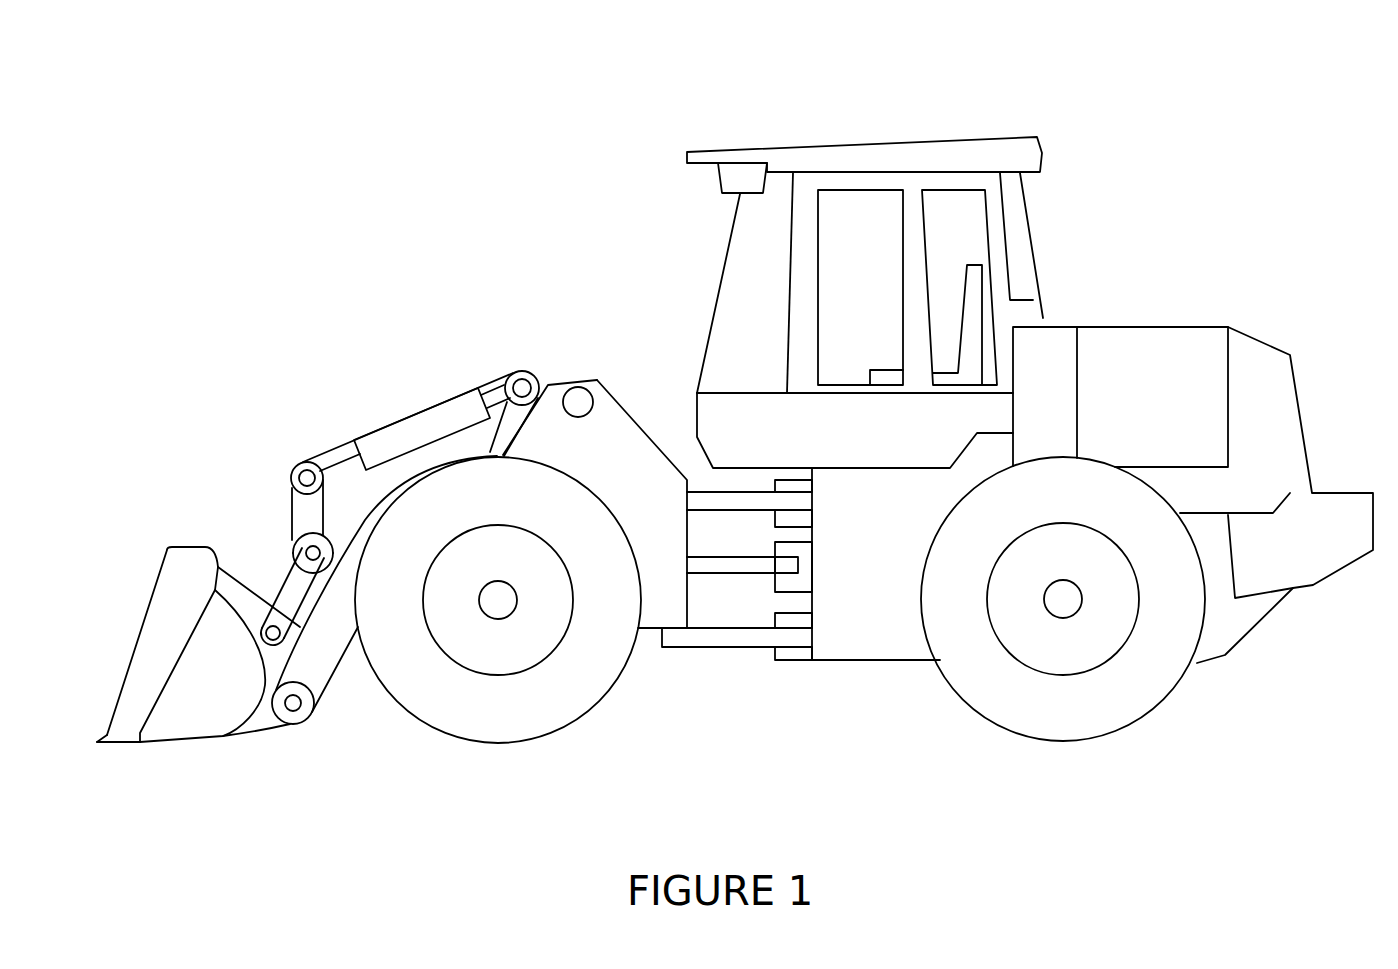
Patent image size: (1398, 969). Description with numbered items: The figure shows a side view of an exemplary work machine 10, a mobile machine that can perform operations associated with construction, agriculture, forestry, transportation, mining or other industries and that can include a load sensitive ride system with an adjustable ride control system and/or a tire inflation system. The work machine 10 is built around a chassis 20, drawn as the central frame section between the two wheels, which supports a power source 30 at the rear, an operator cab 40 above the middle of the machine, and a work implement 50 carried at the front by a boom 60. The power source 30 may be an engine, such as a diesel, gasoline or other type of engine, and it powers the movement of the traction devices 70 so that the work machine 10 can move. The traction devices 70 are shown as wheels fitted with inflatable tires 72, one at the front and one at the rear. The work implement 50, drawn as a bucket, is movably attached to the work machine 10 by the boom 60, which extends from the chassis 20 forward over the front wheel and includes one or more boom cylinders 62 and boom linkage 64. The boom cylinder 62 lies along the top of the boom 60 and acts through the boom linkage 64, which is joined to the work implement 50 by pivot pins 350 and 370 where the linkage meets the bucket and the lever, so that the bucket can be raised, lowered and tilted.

The work machine 10 is at (430, 172).
The chassis 20 is at (702, 682).
The power source 30 is at (1171, 417).
The operator cab 40 is at (1037, 137).
The work implement 50 is at (153, 598).
The boom 60 is at (337, 370).
The boom cylinder 62 is at (443, 417).
The boom linkage 64 is at (302, 518).
The traction devices 70 is at (373, 723).
The inflatable tires 72 is at (498, 728).
The bucket pin 350 is at (271, 622).
The lever pin 370 is at (305, 551).